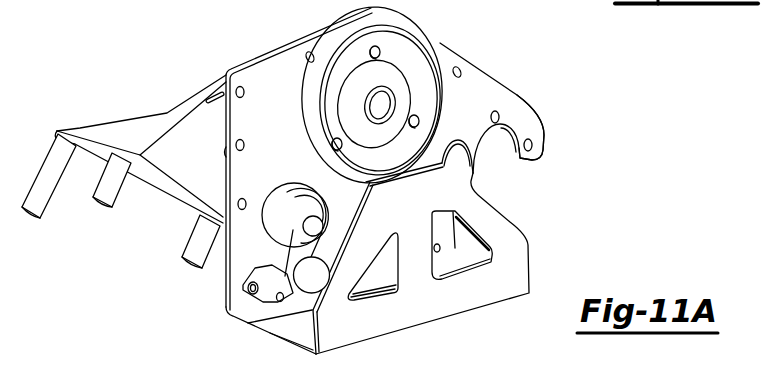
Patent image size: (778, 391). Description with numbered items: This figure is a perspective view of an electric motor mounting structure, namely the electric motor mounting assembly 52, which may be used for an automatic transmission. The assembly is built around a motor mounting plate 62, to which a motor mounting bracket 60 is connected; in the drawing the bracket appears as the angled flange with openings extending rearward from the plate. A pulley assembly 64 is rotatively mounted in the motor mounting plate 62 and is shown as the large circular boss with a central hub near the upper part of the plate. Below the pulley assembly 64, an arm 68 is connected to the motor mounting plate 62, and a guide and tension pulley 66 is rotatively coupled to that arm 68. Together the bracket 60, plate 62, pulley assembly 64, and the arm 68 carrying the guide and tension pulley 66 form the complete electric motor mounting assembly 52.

The electric motor mounting assembly 52 is at (531, 68).
The motor mounting bracket 60 is at (522, 260).
The motor mounting plate 62 is at (483, 87).
The pulley assembly 64 is at (423, 30).
The guide and tension pulley 66 is at (270, 228).
The arm 68 is at (277, 270).